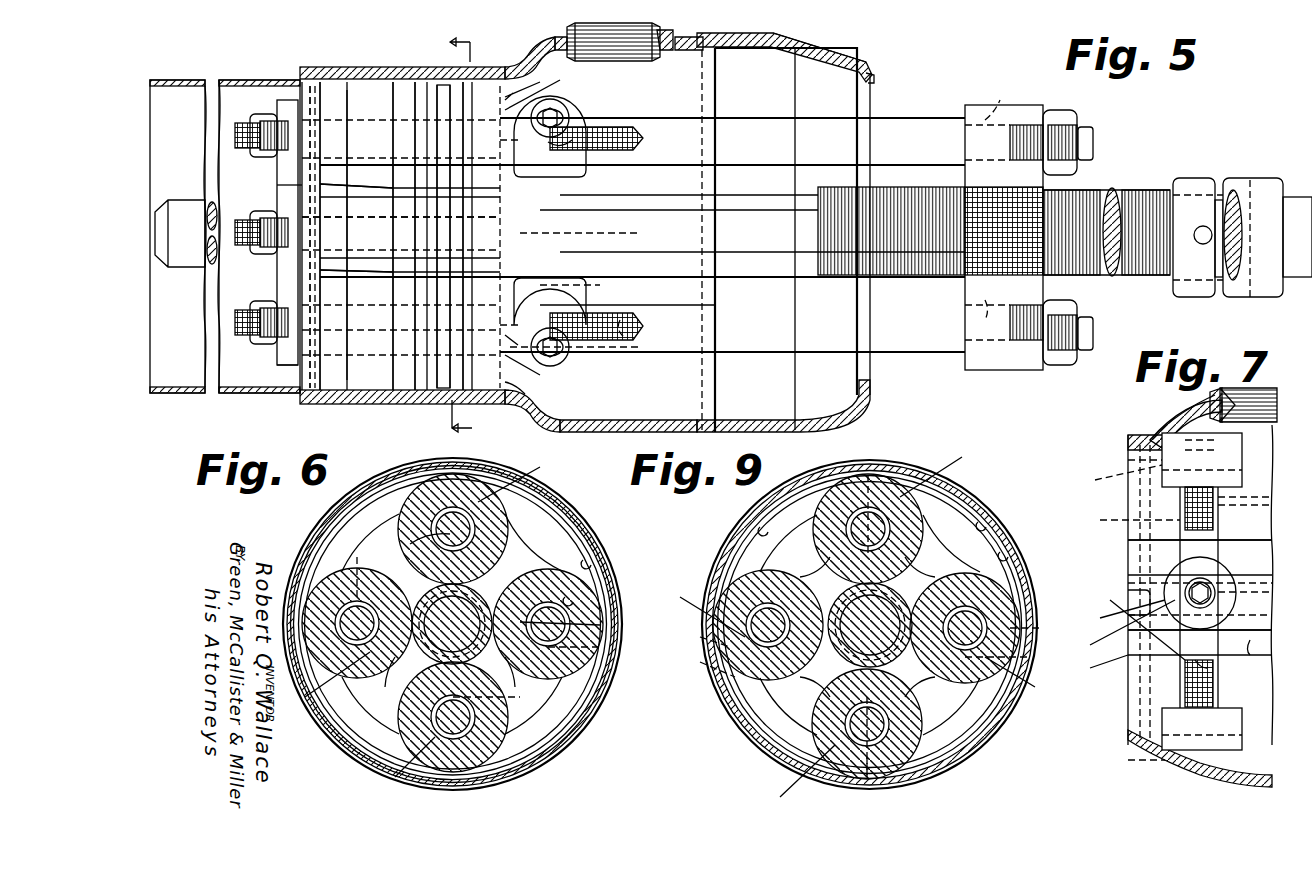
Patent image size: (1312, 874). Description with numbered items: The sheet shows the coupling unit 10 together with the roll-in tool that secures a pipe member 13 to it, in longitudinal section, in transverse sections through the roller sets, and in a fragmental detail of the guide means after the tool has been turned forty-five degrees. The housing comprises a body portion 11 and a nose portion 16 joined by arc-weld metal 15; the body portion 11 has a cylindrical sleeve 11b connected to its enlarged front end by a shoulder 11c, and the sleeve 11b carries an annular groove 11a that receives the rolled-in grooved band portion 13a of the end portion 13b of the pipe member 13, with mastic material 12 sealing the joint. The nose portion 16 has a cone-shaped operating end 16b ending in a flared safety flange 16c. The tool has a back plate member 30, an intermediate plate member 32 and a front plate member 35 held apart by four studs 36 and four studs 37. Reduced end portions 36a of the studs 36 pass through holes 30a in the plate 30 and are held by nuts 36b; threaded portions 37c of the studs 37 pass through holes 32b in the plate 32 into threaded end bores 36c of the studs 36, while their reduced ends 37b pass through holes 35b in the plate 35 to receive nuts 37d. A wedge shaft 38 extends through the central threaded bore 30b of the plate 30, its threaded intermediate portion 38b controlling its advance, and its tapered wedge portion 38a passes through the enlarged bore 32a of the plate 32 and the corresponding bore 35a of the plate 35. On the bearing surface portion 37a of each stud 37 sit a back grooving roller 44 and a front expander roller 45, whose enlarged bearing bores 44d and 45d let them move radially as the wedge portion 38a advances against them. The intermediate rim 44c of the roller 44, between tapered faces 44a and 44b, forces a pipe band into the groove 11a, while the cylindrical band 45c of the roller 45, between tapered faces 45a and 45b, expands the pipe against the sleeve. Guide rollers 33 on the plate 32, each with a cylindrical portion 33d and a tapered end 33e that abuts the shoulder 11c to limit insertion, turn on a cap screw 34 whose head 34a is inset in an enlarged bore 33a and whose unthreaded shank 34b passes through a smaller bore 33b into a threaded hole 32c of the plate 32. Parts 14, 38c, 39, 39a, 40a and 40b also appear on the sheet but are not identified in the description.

In FIG. 5, the coupling unit 10 is at (770, 50).
In FIG. 6, the coupling unit 10 is at (315, 520).
In FIG. 9, the coupling unit 10 is at (735, 520).
In FIG. 7, the coupling unit 10 is at (1272, 627).
In FIG. 5, the body portion 11 is at (610, 415).
In FIG. 7, the body portion 11 is at (1250, 789).
In FIG. 5, the annular groove 11a is at (445, 70).
In FIG. 6, the annular groove 11a is at (578, 545).
In FIG. 6, the sleeve 11b is at (302, 548).
In FIG. 9, the sleeve 11b is at (722, 548).
In FIG. 5, the shoulder 11c is at (524, 74).
In FIG. 7, the shoulder 11c is at (1170, 440).
In FIG. 5, the mastic material 12 is at (460, 405).
In FIG. 6, the mastic material 12 is at (592, 555).
In FIG. 5, the pipe member 13 is at (152, 57).
In FIG. 6, the pipe member 13 is at (312, 570).
In FIG. 9, the pipe member 13 is at (995, 552).
In FIG. 9, the rolled-in grooved band portion 13a is at (992, 525).
In FIG. 5, the end portion of the pipe member 13b is at (520, 390).
In FIG. 6, the end portion of the pipe member 13b is at (592, 566).
In FIG. 9, the end portion of the pipe member 13b is at (704, 550).
In FIG. 7, the end portion of the pipe member 13b is at (1125, 462).
In FIG. 5, the threaded fitting 14 is at (570, 28).
In FIG. 7, the threaded fitting 14 is at (1245, 395).
In FIG. 5, the arc-weld metal 15 is at (664, 48).
In FIG. 7, the arc-weld metal 15 is at (1215, 395).
In FIG. 5, the nose portion 16 is at (776, 40).
In FIG. 5, the cone-shaped front end 16b is at (843, 53).
In FIG. 5, the safety flange 16c is at (869, 76).
In FIG. 5, the back plate member 30 is at (1022, 106).
In FIG. 5, the holes 30a is at (1004, 142).
In FIG. 5, the central threaded bore 30b is at (1025, 187).
In FIG. 5, the intermediate plate member 32 is at (578, 196).
In FIG. 7, the intermediate plate member 32 is at (1240, 540).
In FIG. 5, the enlarged central bore 32a is at (570, 290).
In FIG. 7, the enlarged central bore 32a is at (1210, 665).
In FIG. 5, the holes 32b is at (558, 230).
In FIG. 7, the threaded hole portion 32c is at (1124, 516).
In FIG. 5, the guide roller 33 is at (583, 112).
In FIG. 7, the guide roller 33 is at (1242, 460).
In FIG. 7, the enlarged bore portion 33a is at (1128, 460).
In FIG. 7, the smaller bore portion 33b is at (1115, 481).
In FIG. 5, the cylindrical portion 33d is at (512, 140).
In FIG. 7, the cylindrical portion 33d is at (1264, 541).
In FIG. 5, the tapered end 33e is at (600, 110).
In FIG. 7, the tapered end 33e is at (1170, 440).
In FIG. 5, the cap screw 34 is at (553, 112).
In FIG. 7, the cap screw 34 is at (1240, 445).
In FIG. 7, the head portion 34a is at (1220, 440).
In FIG. 7, the shank 34b is at (1264, 504).
In FIG. 5, the front plate member 35 is at (280, 106).
In FIG. 6, the front plate member 35 is at (360, 697).
In FIG. 9, the front plate member 35 is at (775, 705).
In FIG. 5, the bore 35a is at (280, 187).
In FIG. 6, the bore 35a is at (492, 590).
In FIG. 9, the bore 35a is at (825, 665).
In FIG. 5, the holes 35b is at (290, 345).
In FIG. 5, the spacer studs 36 is at (775, 155).
In FIG. 5, the reduced end portions 36a is at (987, 105).
In FIG. 5, the nuts 36b is at (1065, 115).
In FIG. 5, the threaded end bores 36c is at (635, 150).
In FIG. 5, the bearing studs 37 is at (380, 225).
In FIG. 6, the bearing studs 37 is at (350, 620).
In FIG. 9, the bearing studs 37 is at (880, 532).
In FIG. 5, the bearing surface portions 37a is at (382, 180).
In FIG. 6, the bearing surface portions 37a is at (410, 538).
In FIG. 5, the reduced ends 37b is at (242, 157).
In FIG. 5, the threaded male portions 37c is at (620, 340).
In FIG. 5, the nuts 37d is at (258, 122).
In FIG. 6, the nuts 37d is at (636, 658).
In FIG. 9, the nuts 37d is at (945, 792).
In FIG. 7, the nuts 37d is at (1117, 622).
In FIG. 5, the wedge shaft 38 is at (885, 277).
In FIG. 5, the tapered wedge portion 38a is at (187, 268).
In FIG. 6, the tapered wedge portion 38a is at (420, 592).
In FIG. 9, the tapered wedge portion 38a is at (917, 677).
In FIG. 7, the tapered wedge portion 38a is at (1265, 650).
In FIG. 5, the threaded intermediate portion 38b is at (1151, 178).
In FIG. 5, the collar 38c is at (1190, 195).
In FIG. 5, the ring 39 is at (1262, 180).
In FIG. 5, the shaft stub 39a is at (1298, 280).
In FIG. 5, the pin hole 40a is at (1200, 242).
In FIG. 5, the pin 40b is at (1233, 283).
In FIG. 5, the back grooving roller 44 is at (520, 100).
In FIG. 6, the back grooving roller 44 is at (505, 480).
In FIG. 9, the back grooving roller 44 is at (915, 517).
In FIG. 7, the back grooving roller 44 is at (1128, 592).
In FIG. 5, the tapered face 44a is at (548, 91).
In FIG. 5, the tapered face 44b is at (407, 82).
In FIG. 5, the intermediate rim portion 44c is at (444, 82).
In FIG. 5, the enlarged bearing bore 44d is at (480, 118).
In FIG. 6, the enlarged bearing bore 44d is at (484, 630).
In FIG. 9, the enlarged bearing bore 44d is at (839, 625).
In FIG. 7, the enlarged bearing bore 44d is at (1112, 605).
In FIG. 5, the front expander roller 45 is at (330, 68).
In FIG. 9, the front expander roller 45 is at (807, 568).
In FIG. 5, the tapered face 45a is at (362, 94).
In FIG. 5, the tapered face 45b is at (303, 82).
In FIG. 5, the cylindrical band portion 45c is at (314, 80).
In FIG. 5, the bearing bore portion 45d is at (362, 120).
In FIG. 9, the bearing bore portion 45d is at (865, 507).
In FIG. 7, the bearing bore portion 45d is at (1094, 662).